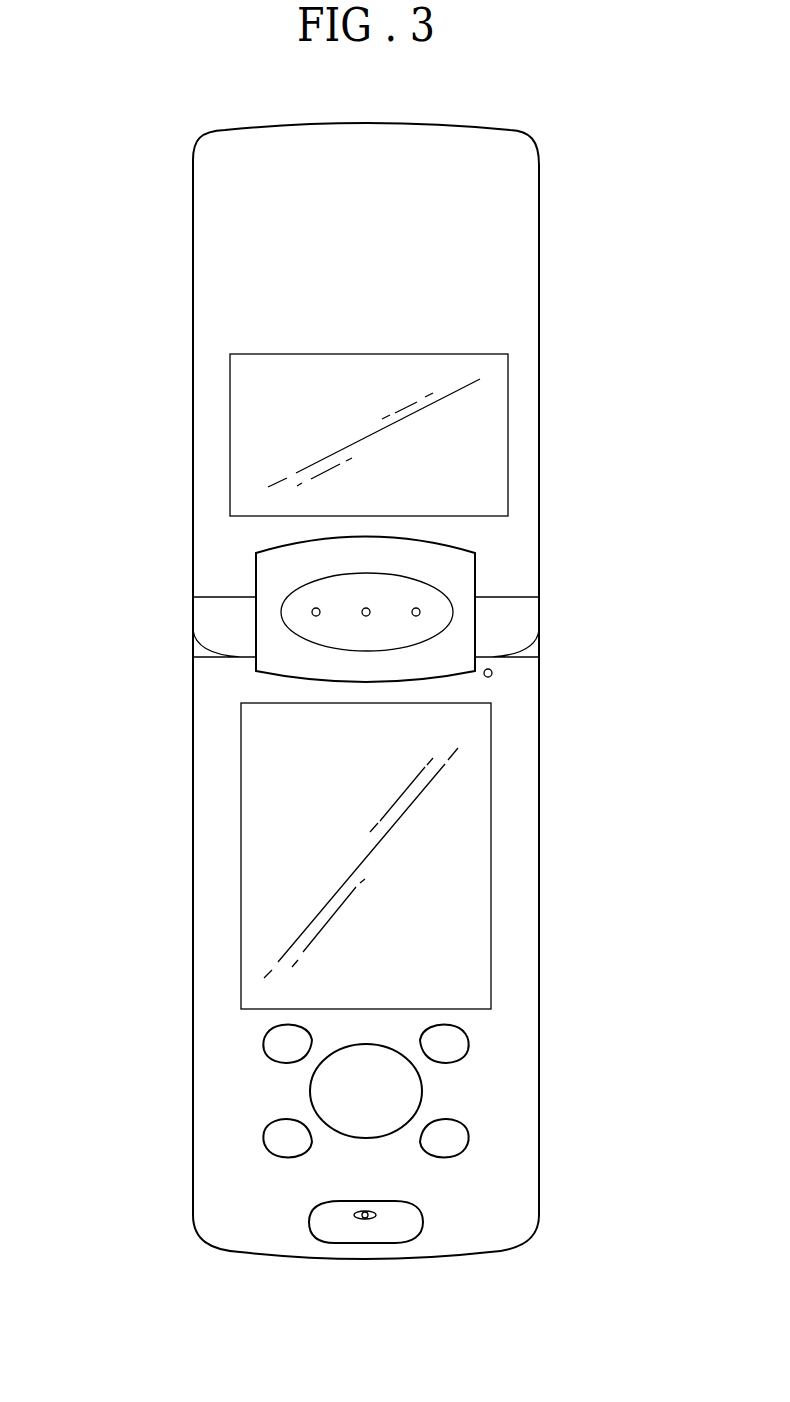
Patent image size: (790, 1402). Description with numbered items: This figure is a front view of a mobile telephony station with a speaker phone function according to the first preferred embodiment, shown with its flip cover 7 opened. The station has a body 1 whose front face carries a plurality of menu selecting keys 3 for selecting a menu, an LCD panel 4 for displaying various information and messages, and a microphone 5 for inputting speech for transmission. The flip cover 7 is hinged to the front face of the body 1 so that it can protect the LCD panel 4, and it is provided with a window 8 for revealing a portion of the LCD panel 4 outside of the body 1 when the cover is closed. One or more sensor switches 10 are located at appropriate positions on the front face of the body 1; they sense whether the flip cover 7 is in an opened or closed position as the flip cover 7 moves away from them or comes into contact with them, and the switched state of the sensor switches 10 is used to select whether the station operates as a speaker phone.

The body 1 is at (369, 691).
The menu selecting keys 3 is at (372, 1110).
The LCD panel 4 is at (455, 877).
The microphone 5 is at (378, 1215).
The flip cover 7 is at (497, 282).
The window 8 is at (295, 420).
The sensor switches 10 is at (492, 676).